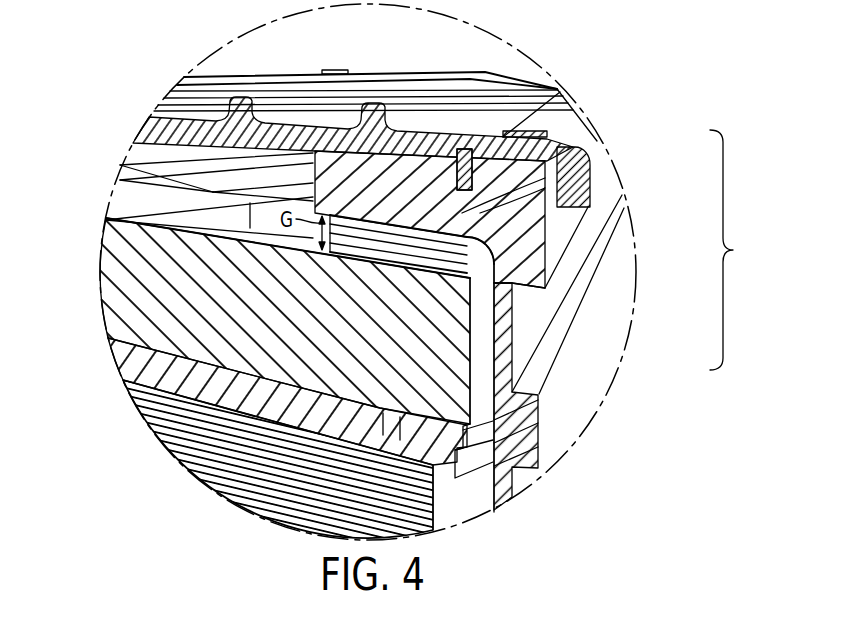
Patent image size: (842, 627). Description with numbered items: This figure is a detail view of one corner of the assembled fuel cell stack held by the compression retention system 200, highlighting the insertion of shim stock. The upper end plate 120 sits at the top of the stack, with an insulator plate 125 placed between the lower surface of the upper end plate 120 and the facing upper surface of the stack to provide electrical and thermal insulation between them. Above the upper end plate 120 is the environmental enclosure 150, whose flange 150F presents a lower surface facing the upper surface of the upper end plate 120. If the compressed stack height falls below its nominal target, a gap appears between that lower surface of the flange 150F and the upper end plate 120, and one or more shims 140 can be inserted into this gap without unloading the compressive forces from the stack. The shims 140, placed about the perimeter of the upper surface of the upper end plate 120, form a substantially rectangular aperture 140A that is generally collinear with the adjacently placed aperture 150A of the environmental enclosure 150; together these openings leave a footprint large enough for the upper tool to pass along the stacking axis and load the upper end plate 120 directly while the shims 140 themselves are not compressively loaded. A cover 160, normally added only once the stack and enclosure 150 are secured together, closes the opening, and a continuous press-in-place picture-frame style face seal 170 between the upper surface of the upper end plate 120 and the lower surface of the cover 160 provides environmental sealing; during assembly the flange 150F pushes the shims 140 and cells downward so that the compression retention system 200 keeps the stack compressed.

The upper end plate 120 is at (108, 268).
The insulator plate 125 is at (122, 360).
The shim 140 is at (573, 207).
The aperture 140A is at (130, 190).
The environmental enclosure 150 is at (597, 317).
The aperture 150A is at (138, 147).
The flange 150F is at (573, 146).
The cover 160 is at (217, 83).
The face seal 170 is at (550, 102).
The compression retention system 200 is at (741, 250).